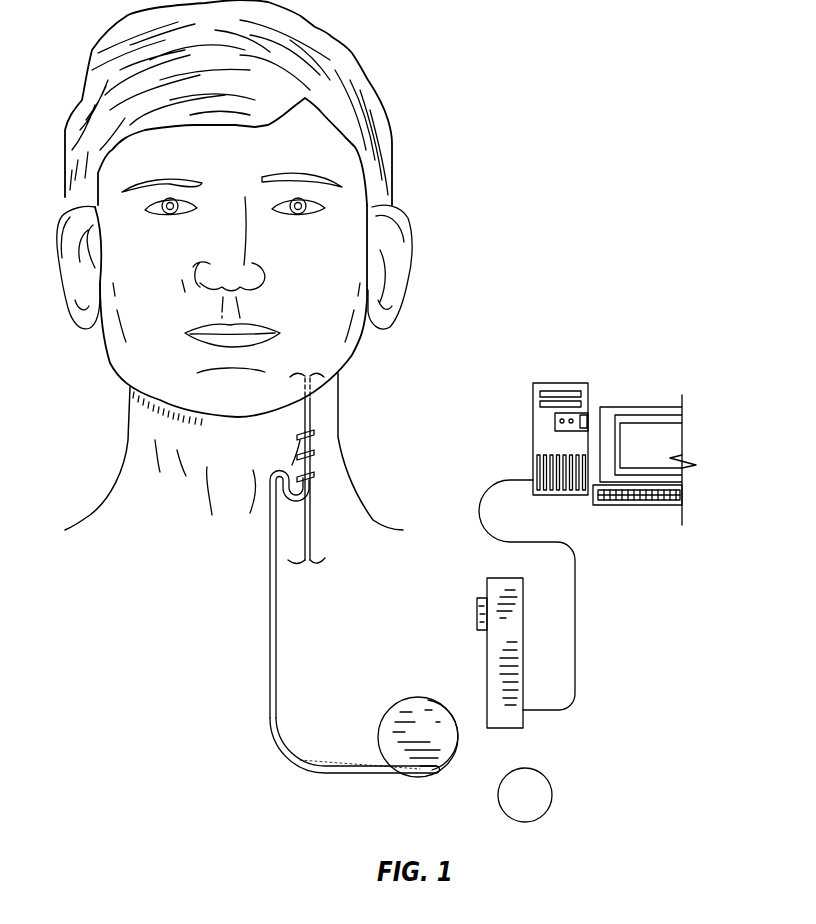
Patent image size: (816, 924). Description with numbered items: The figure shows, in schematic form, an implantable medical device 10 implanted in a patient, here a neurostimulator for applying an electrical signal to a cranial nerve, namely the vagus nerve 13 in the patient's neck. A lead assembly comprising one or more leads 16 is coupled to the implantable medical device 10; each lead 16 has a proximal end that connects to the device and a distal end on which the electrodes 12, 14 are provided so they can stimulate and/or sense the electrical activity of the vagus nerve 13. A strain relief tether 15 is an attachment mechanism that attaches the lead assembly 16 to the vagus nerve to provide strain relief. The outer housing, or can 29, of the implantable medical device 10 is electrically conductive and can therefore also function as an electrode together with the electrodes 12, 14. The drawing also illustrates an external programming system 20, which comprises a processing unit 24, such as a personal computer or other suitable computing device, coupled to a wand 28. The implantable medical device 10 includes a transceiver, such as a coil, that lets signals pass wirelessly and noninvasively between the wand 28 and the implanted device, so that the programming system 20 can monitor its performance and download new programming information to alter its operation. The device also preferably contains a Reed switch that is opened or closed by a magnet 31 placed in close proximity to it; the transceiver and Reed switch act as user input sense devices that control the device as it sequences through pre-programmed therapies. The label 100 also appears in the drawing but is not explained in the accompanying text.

The catheter system 10 is at (381, 706).
The catheter 12 is at (312, 435).
The skin exit site 13 is at (312, 408).
The cuff 14 is at (312, 452).
The catheter tubing 15 is at (316, 477).
The connecting tube 16 is at (268, 586).
The computer system 20 is at (710, 377).
The computer 24 is at (533, 412).
The controller 28 is at (487, 592).
The reservoir 29 is at (423, 705).
The motor 31 is at (530, 773).
The patient 100 is at (311, 533).